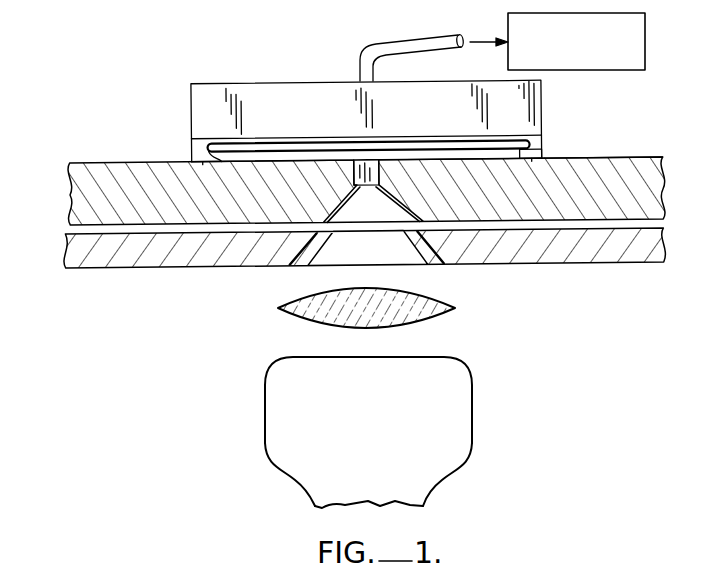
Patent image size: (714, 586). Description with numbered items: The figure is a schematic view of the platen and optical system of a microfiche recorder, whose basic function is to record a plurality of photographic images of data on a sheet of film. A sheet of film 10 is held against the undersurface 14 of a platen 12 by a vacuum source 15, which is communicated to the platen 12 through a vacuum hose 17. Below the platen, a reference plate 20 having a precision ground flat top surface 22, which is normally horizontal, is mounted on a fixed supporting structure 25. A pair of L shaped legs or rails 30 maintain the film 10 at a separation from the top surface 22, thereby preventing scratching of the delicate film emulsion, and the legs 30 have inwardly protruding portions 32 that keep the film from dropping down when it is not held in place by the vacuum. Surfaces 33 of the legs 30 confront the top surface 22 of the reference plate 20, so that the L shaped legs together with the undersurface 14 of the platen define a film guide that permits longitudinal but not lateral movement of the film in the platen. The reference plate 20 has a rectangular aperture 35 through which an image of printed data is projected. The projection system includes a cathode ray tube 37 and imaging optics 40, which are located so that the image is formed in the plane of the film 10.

The sheet of film 10 is at (497, 151).
The platen 12 is at (203, 106).
The undersurface of platen 14 is at (279, 142).
The vacuum source 15 is at (646, 27).
The vacuum hose 17 is at (400, 46).
The reference plate 20 is at (90, 200).
The top surface of reference plate 22 is at (640, 159).
The fixed supporting structure 25 is at (80, 256).
The L shaped legs 30 is at (192, 150).
The inwardly protruding portions 32 is at (223, 162).
The surfaces of legs 33 is at (203, 163).
The rectangular aperture 35 is at (352, 179).
The cathode ray tube 37 is at (464, 383).
The imaging optics 40 is at (440, 316).